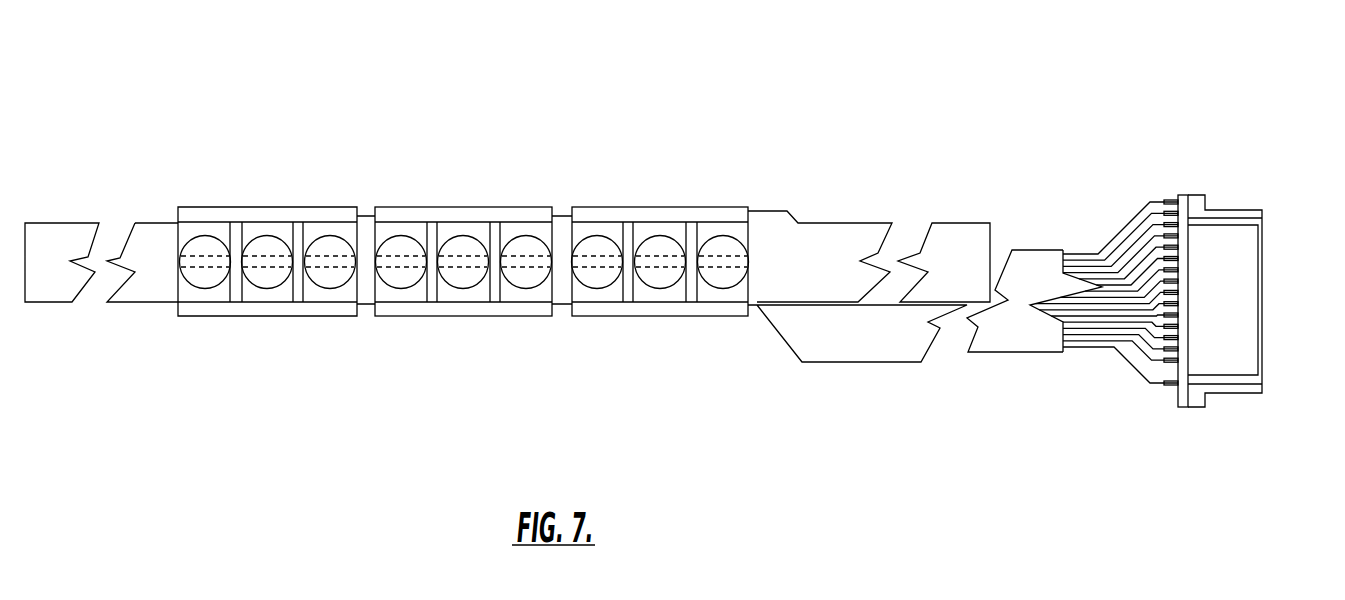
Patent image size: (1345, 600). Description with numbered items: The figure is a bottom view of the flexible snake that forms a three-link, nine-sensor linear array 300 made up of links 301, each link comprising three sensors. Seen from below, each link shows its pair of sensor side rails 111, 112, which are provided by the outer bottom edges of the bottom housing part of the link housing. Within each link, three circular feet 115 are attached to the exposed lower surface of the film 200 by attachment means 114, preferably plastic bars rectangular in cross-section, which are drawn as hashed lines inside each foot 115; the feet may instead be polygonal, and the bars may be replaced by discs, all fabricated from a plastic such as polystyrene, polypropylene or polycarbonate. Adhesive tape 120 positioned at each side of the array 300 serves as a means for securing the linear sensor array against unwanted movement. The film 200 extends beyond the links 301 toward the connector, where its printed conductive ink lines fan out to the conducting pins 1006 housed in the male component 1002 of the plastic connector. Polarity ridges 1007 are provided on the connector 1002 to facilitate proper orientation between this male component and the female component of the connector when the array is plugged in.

The linear array 300 is at (757, 88).
The links 301 is at (562, 255).
The sensor side rail 111 is at (336, 207).
The sensor side rail 112 is at (258, 317).
The attachment means 114 is at (273, 248).
The circular foot 115 is at (463, 275).
The adhesive tape 120 is at (955, 223).
The film 200 is at (562, 306).
The male component of connector 1002 is at (1202, 335).
The conducting pins 1006 is at (1167, 387).
The polarity ridges 1007 is at (1182, 408).